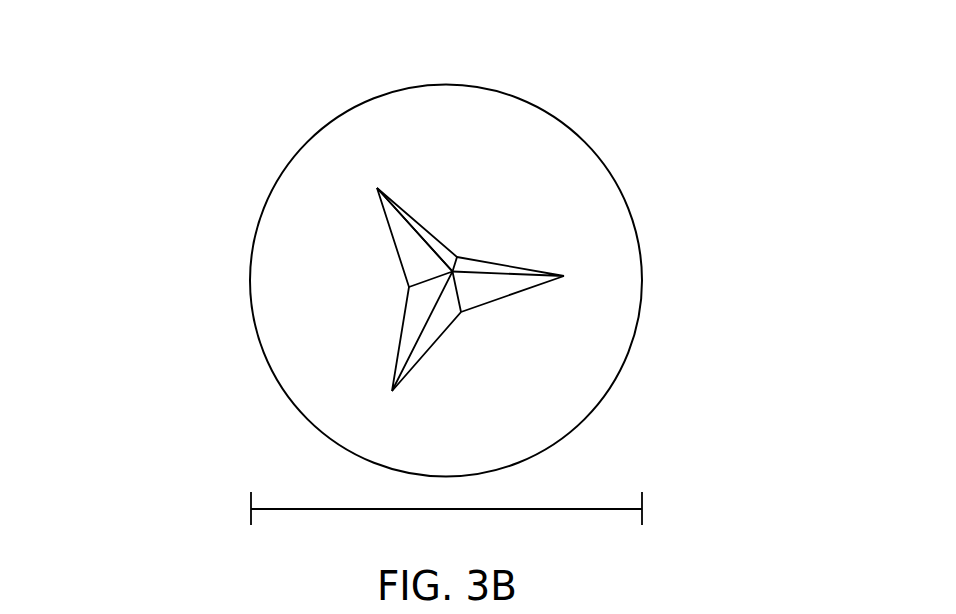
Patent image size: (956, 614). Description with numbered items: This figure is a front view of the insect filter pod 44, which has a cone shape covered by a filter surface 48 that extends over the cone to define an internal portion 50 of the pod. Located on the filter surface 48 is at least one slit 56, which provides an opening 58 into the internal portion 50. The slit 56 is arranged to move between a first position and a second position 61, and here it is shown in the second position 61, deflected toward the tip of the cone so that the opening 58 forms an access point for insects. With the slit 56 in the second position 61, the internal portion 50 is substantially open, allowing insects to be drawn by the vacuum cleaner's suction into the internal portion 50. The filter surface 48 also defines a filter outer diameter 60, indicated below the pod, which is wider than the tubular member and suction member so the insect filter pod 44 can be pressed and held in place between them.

The insect filter pod 44 is at (352, 100).
The filter surface 48 is at (370, 360).
The internal portion 50 is at (440, 313).
The at least one slit 56 is at (435, 222).
The opening 58 is at (474, 284).
The filter outer diameter 60 is at (577, 507).
The second position 61 is at (420, 253).